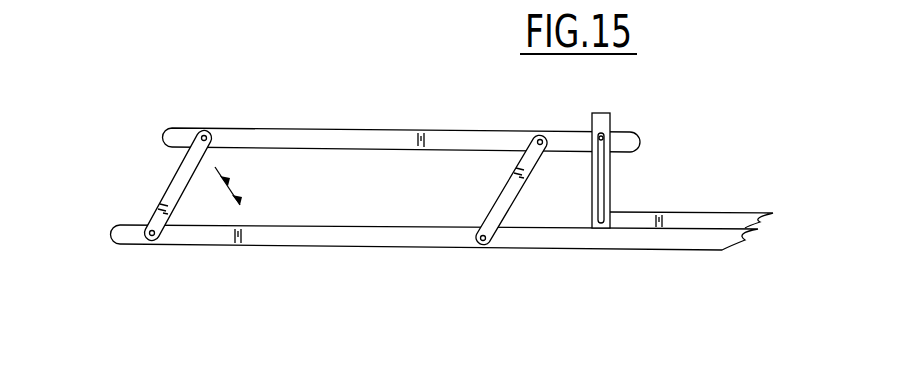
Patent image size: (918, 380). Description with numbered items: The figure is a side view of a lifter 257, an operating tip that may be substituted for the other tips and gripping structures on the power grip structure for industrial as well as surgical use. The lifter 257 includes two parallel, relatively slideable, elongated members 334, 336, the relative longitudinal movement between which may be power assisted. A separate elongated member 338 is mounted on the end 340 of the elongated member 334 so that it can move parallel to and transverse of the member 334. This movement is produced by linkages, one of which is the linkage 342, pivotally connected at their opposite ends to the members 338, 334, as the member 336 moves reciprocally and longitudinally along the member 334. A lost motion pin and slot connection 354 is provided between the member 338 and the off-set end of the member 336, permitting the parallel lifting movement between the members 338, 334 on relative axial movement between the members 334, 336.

The separate elongated member 338 is at (323, 128).
The lifter 257 is at (322, 250).
The end of elongated member 334 340 is at (137, 244).
The elongated member 336 is at (697, 210).
The linkage 342 is at (165, 188).
The elongated member 334 is at (495, 198).
The lost motion pin and slot connection 354 is at (610, 173).